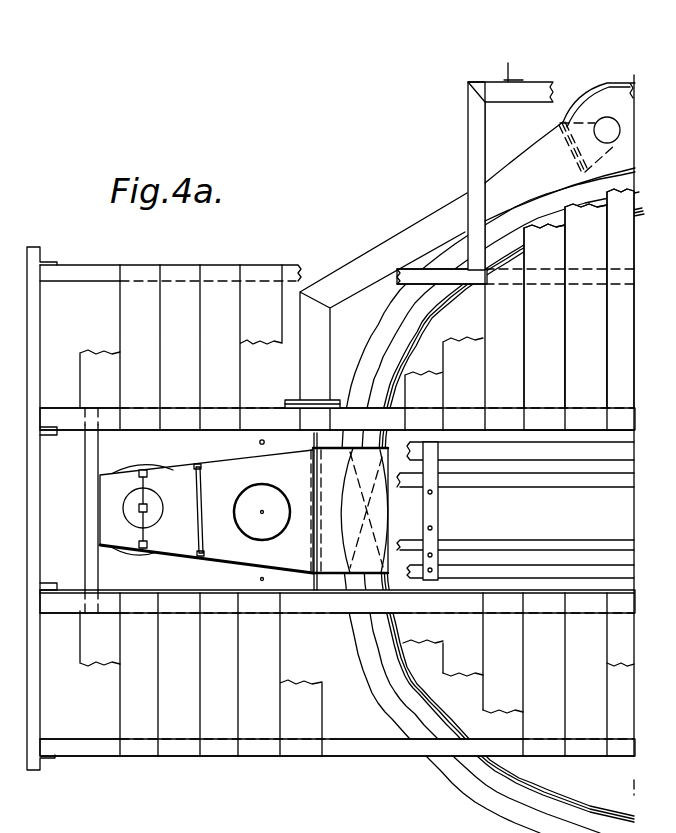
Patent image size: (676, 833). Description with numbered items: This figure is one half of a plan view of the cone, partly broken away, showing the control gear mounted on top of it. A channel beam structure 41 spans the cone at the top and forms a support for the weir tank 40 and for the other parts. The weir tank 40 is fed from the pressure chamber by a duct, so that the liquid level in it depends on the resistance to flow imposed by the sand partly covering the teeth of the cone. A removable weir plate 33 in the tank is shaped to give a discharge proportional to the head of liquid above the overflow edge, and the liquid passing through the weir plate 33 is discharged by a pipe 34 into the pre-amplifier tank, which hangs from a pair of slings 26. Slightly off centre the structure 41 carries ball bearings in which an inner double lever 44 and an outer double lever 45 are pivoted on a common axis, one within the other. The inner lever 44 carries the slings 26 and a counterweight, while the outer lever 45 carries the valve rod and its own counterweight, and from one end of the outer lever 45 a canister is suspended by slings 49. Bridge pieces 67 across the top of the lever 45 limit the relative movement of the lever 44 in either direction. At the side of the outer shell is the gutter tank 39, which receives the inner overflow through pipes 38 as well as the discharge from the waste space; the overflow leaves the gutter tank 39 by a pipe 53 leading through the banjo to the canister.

The slings 26 is at (141, 462).
The weir plate 33 is at (196, 548).
The pipe 34 is at (363, 567).
The pipes 38 is at (622, 198).
The gutter tank 39 is at (565, 118).
The weir tank 40 is at (280, 452).
The channel beam structure 41 is at (418, 648).
The inner double lever 44 is at (575, 500).
The outer double lever 45 is at (503, 568).
The slings 49 is at (259, 441).
The pipe 53 is at (405, 212).
The bridge pieces 67 is at (438, 492).